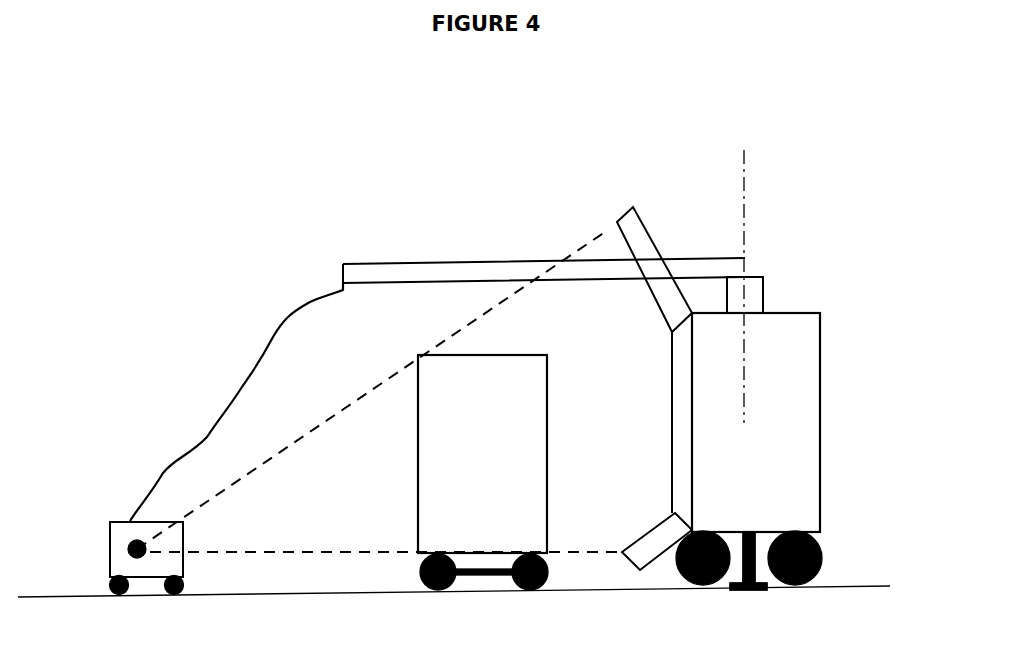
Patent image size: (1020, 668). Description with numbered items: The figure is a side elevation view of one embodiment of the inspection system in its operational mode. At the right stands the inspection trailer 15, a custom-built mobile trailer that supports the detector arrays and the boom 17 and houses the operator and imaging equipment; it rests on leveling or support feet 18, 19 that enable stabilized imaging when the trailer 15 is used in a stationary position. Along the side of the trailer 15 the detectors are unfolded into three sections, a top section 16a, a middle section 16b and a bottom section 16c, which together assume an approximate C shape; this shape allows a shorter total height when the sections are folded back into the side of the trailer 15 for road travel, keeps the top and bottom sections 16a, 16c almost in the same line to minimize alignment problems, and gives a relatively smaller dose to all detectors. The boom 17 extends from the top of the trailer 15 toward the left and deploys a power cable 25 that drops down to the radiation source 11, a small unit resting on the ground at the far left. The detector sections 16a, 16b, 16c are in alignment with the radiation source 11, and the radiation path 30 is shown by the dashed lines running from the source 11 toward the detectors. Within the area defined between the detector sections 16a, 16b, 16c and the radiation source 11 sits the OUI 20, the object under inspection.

The radiation source 11 is at (111, 526).
The inspection trailer 15 is at (785, 482).
The top detector section 16a is at (635, 228).
The middle detector section 16b is at (672, 375).
The bottom detector section 16c is at (657, 540).
The boom 17 is at (416, 272).
The support foot 18 is at (745, 557).
The support foot 19 is at (748, 561).
The OUI 20 is at (438, 433).
The power cable 25 is at (238, 383).
The line of sight 30 is at (327, 417).